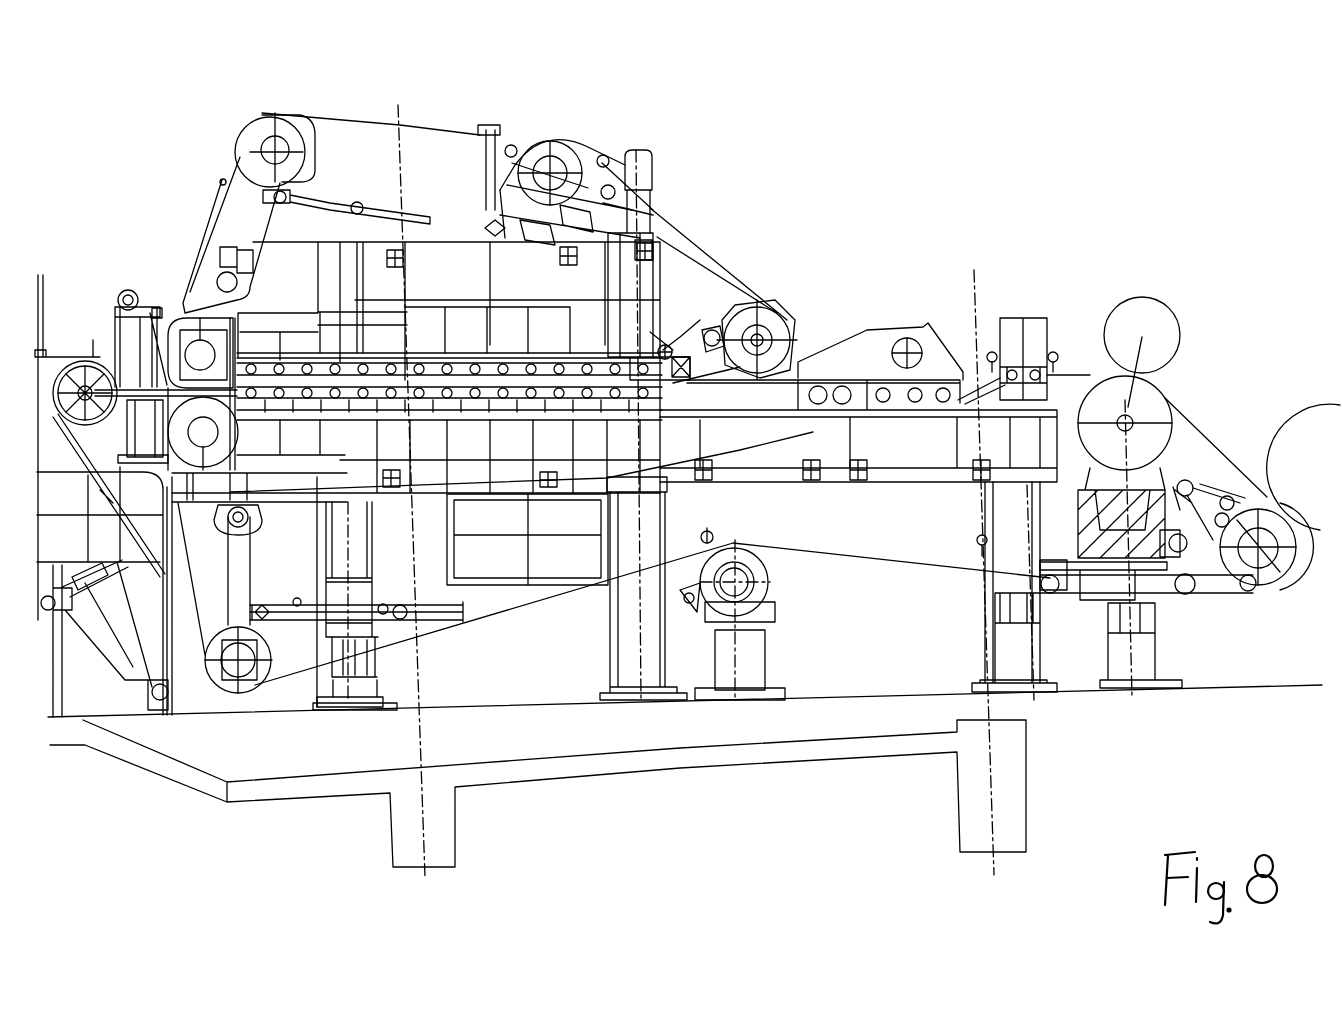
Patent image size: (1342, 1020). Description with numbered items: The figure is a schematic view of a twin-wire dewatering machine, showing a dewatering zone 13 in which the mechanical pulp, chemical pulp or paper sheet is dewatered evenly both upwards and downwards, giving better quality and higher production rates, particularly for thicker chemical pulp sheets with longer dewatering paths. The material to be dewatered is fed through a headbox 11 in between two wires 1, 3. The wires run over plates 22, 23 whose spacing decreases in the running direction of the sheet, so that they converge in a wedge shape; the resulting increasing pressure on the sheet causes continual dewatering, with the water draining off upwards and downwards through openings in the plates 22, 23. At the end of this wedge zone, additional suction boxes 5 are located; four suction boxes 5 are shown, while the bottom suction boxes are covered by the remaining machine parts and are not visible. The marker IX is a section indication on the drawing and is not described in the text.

The wire 1 is at (207, 228).
The headbox 11 is at (113, 307).
The dewatering zone 13 is at (592, 124).
The plate 22 is at (652, 156).
The suction box 5 is at (682, 337).
The section marker IX is at (755, 342).
The wire 3 is at (520, 620).
The plate 23 is at (610, 418).